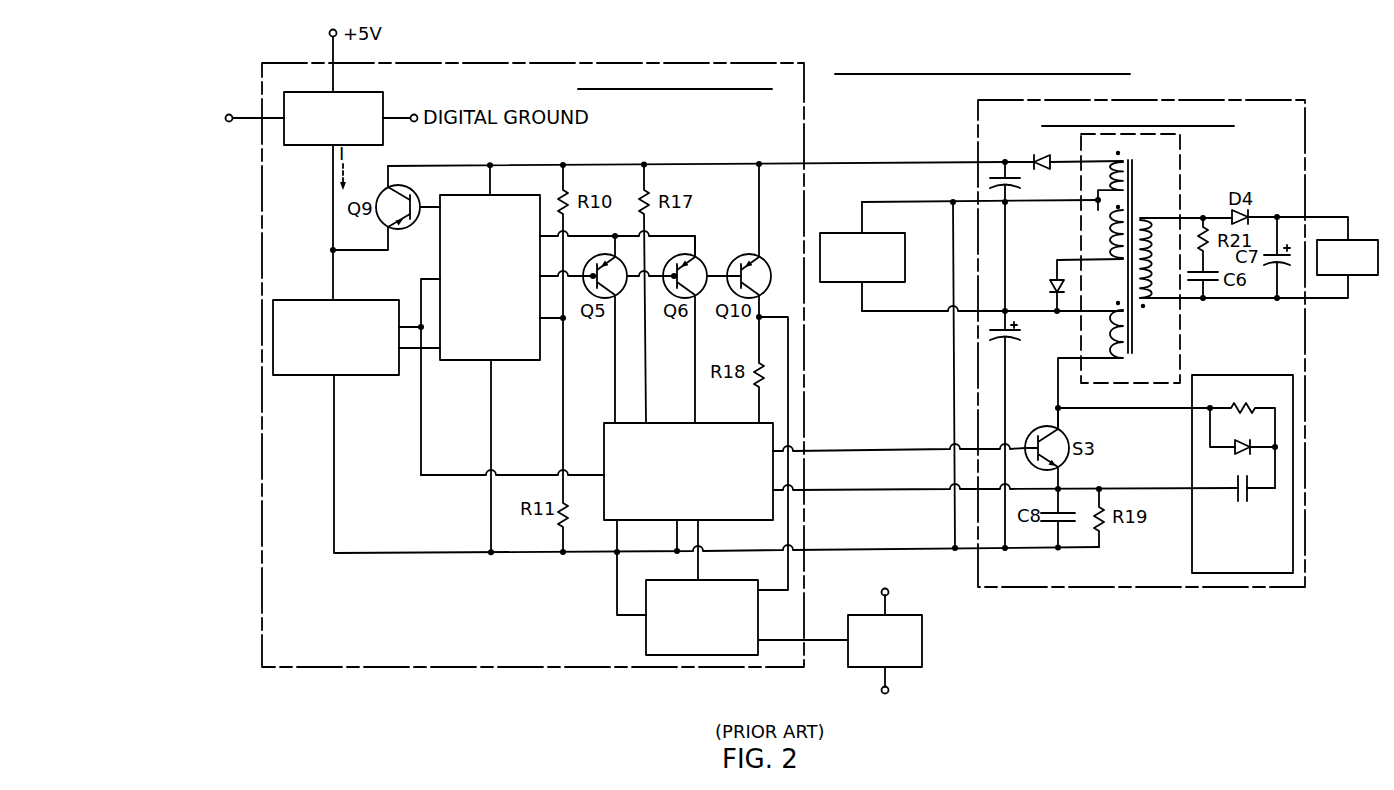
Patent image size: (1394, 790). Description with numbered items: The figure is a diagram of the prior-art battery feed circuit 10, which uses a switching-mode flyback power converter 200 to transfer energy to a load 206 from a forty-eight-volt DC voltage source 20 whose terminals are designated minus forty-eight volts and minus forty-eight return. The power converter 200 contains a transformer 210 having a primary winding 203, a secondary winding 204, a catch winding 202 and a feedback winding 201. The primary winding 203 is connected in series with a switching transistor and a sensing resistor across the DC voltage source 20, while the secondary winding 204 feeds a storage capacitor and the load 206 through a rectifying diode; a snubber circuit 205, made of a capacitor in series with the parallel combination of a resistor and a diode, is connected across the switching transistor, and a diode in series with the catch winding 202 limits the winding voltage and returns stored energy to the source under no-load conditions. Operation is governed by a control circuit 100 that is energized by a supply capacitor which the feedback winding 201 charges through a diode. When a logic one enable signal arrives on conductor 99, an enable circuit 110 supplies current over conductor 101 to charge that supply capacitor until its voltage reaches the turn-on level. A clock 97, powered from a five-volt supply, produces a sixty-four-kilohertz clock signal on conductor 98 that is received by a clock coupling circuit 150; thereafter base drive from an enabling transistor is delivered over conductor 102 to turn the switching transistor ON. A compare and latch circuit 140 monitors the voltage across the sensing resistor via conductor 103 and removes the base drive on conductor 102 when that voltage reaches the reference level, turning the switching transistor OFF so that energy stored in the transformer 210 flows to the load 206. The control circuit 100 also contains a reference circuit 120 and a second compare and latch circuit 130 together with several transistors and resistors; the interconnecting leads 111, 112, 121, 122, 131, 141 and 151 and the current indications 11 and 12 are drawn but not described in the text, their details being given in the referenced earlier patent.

The battery feed circuit 10 is at (982, 300).
The DC voltage source 20 is at (856, 283).
The clock 97 is at (880, 668).
The conductor 98 is at (823, 640).
The conductor 99 is at (240, 115).
The control circuit 100 is at (742, 63).
The conductor 101 is at (886, 163).
The conductor 102 is at (877, 450).
The conductor 103 is at (878, 494).
The enable circuit 110 is at (347, 92).
The node lead to band gap reference 111 is at (338, 269).
The emitter lead of transistor Q9 112 is at (388, 250).
The current I1 11 is at (323, 289).
The current I2 12 is at (377, 239).
The reference circuit 120 is at (330, 378).
The band gap reference output lead 121 is at (419, 325).
The band gap reference output lead 122 is at (407, 355).
The compare and latch circuit 130 is at (497, 196).
The compare and latch circuit output lead 131 is at (553, 322).
The compare and latch circuit 140 is at (662, 522).
The feedback lead 141 is at (780, 592).
The clock coupling circuit 150 is at (713, 580).
The clock coupling lead 151 is at (703, 536).
The power converter 200 is at (1245, 100).
The feedback winding 201 is at (1110, 156).
The catch winding 202 is at (1105, 250).
The primary winding 203 is at (1108, 358).
The secondary winding 204 is at (1155, 217).
The snubber circuit 205 is at (1238, 376).
The load 206 is at (1362, 238).
The transformer 210 is at (1182, 139).